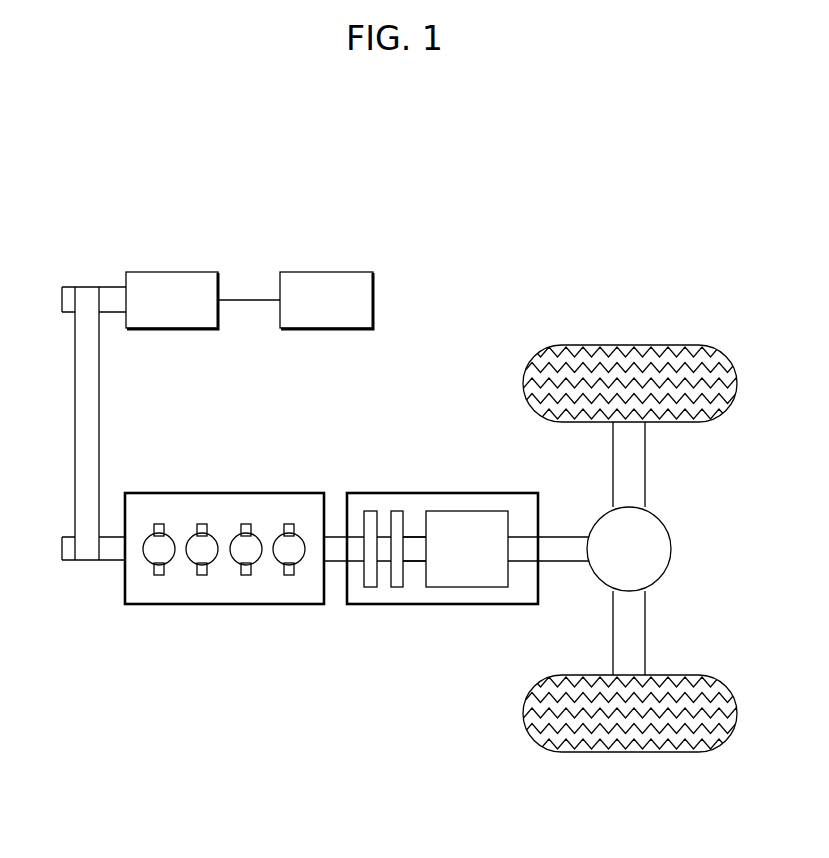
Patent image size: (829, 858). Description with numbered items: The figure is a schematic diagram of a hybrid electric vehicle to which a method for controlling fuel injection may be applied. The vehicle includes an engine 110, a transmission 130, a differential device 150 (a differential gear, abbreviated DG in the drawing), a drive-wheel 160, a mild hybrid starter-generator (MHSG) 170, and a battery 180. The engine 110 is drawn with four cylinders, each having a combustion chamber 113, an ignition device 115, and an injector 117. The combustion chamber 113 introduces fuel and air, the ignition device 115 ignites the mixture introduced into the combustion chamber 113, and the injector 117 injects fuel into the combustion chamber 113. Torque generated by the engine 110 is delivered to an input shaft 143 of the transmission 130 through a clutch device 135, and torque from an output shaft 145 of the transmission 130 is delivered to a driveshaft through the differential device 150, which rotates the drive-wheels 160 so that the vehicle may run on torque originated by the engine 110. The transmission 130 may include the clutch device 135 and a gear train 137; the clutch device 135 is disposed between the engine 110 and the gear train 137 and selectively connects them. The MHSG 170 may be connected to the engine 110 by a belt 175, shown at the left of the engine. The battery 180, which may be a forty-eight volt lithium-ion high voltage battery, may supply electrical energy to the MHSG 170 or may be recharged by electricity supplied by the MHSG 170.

The engine 110 is at (276, 493).
The combustion chamber 113 is at (170, 557).
The ignition device 115 is at (155, 524).
The injector 117 is at (153, 575).
The transmission 130 is at (448, 604).
The clutch device 135 is at (380, 486).
The gear train 137 is at (472, 511).
The input shaft 143 is at (414, 536).
The output shaft 145 is at (568, 537).
The differential device 150 is at (671, 549).
The drive-wheel 160 is at (628, 345).
The mild hybrid starter-generator (MHSG) 170 is at (171, 272).
The belt 175 is at (99, 377).
The battery 180 is at (326, 272).